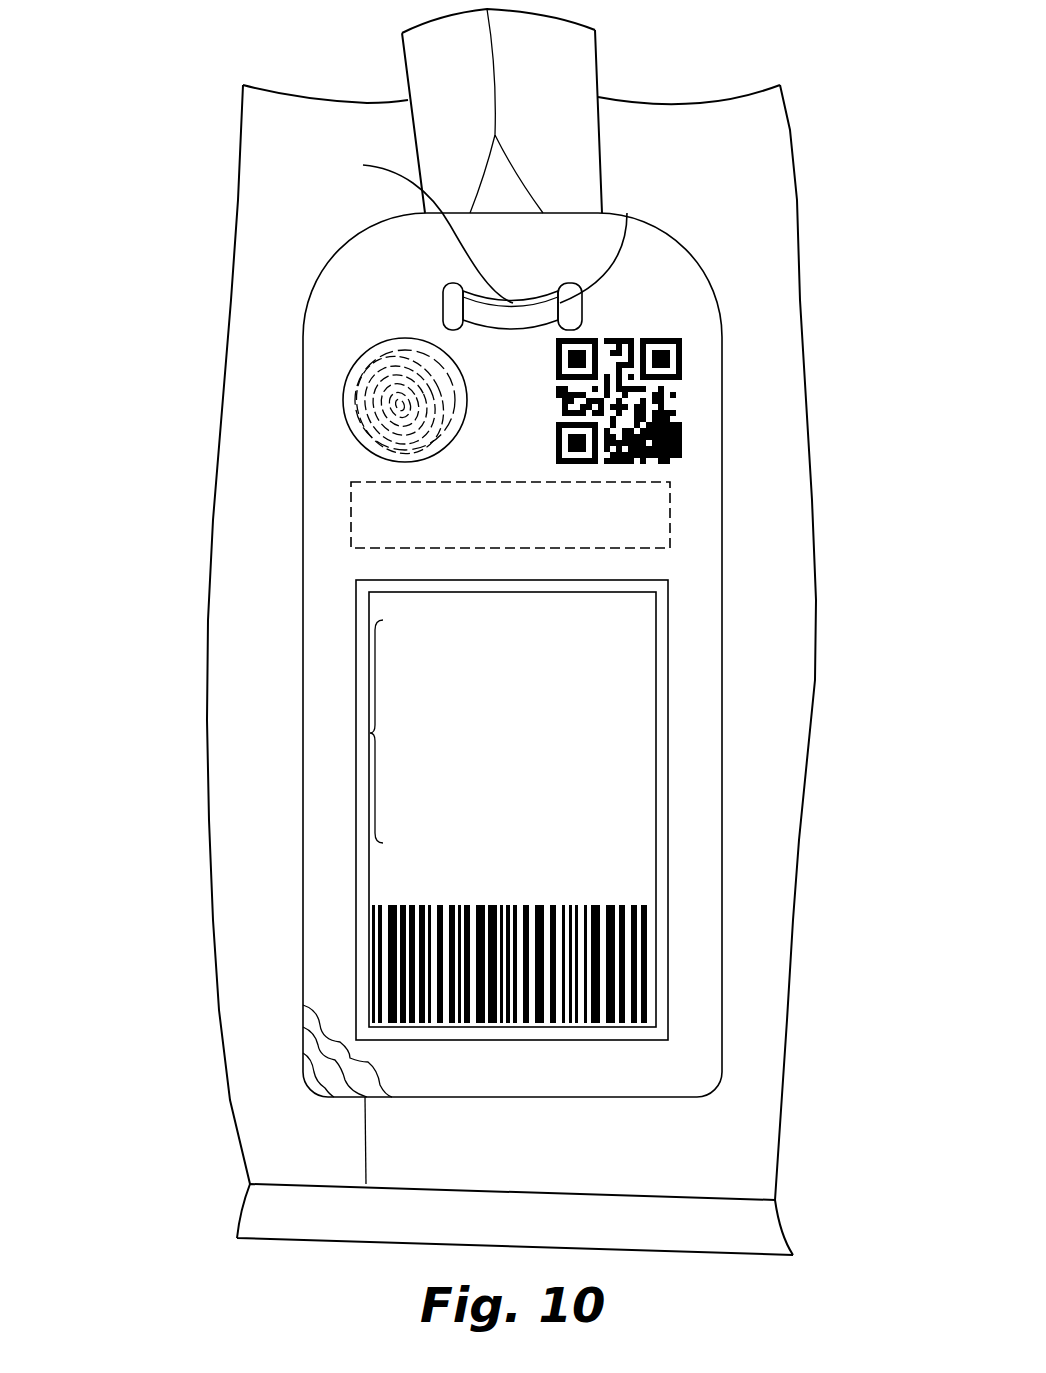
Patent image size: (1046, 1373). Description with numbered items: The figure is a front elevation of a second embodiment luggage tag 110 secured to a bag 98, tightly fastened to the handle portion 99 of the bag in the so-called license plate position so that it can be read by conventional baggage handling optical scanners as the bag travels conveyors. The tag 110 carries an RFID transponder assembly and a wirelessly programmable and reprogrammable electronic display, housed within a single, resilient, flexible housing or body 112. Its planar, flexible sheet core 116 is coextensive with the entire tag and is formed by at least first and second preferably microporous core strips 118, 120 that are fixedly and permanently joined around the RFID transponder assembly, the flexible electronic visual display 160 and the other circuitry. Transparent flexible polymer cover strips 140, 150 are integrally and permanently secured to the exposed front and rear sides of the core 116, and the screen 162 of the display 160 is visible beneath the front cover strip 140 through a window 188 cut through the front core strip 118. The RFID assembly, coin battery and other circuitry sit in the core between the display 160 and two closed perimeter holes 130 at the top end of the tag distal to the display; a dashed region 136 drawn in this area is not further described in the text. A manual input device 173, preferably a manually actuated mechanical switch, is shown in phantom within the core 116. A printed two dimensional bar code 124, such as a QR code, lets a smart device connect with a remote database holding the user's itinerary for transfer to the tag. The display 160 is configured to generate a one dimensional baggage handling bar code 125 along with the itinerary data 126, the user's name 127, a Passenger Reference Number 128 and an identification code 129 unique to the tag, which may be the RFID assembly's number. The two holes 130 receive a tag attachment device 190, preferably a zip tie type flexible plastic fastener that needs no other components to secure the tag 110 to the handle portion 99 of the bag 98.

The bag 98 is at (243, 123).
The handle portion 99 is at (563, 63).
The luggage tag 110 is at (708, 242).
The housing 112 is at (303, 518).
The sheet core 116 is at (235, 1051).
The first core strip 118 is at (303, 1015).
The second core strip 120 is at (303, 1045).
The two dimensional bar code 124 is at (683, 410).
The one dimensional bar code 125 is at (652, 963).
The itinerary data 126 is at (372, 733).
The user's name 127 is at (393, 856).
The Passenger Reference Number 128 is at (648, 856).
The identification code 129 is at (467, 895).
The closed perimeter holes 130 is at (443, 307).
The display region 136 is at (670, 515).
The front cover strip 140 is at (320, 968).
The rear cover strip 150 is at (310, 1083).
The electronic visual display 160 is at (513, 774).
The screen 162 is at (400, 612).
The manual input device 173 is at (347, 372).
The window 188 is at (660, 738).
The tag attachment device 190 is at (363, 165).